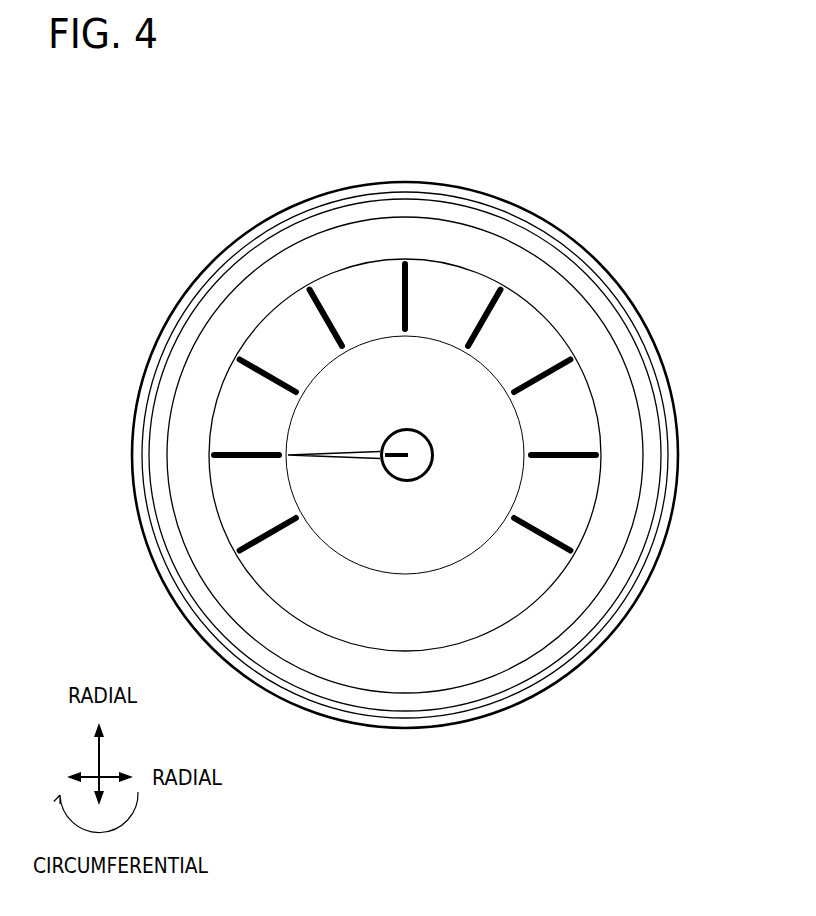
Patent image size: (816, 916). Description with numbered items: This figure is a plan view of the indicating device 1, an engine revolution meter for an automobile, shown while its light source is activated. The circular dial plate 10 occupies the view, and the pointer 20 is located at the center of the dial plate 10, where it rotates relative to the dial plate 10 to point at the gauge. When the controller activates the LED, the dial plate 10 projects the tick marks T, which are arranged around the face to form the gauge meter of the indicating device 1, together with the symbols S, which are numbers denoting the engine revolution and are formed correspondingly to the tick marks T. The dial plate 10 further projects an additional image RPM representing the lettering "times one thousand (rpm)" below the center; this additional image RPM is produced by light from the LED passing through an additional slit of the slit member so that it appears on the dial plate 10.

The indicating device 1 is at (725, 200).
The dial plate 10 is at (515, 658).
The pointer 20 is at (414, 498).
The tick marks T is at (253, 347).
The symbols S is at (209, 314).
The additional image RPM is at (422, 667).